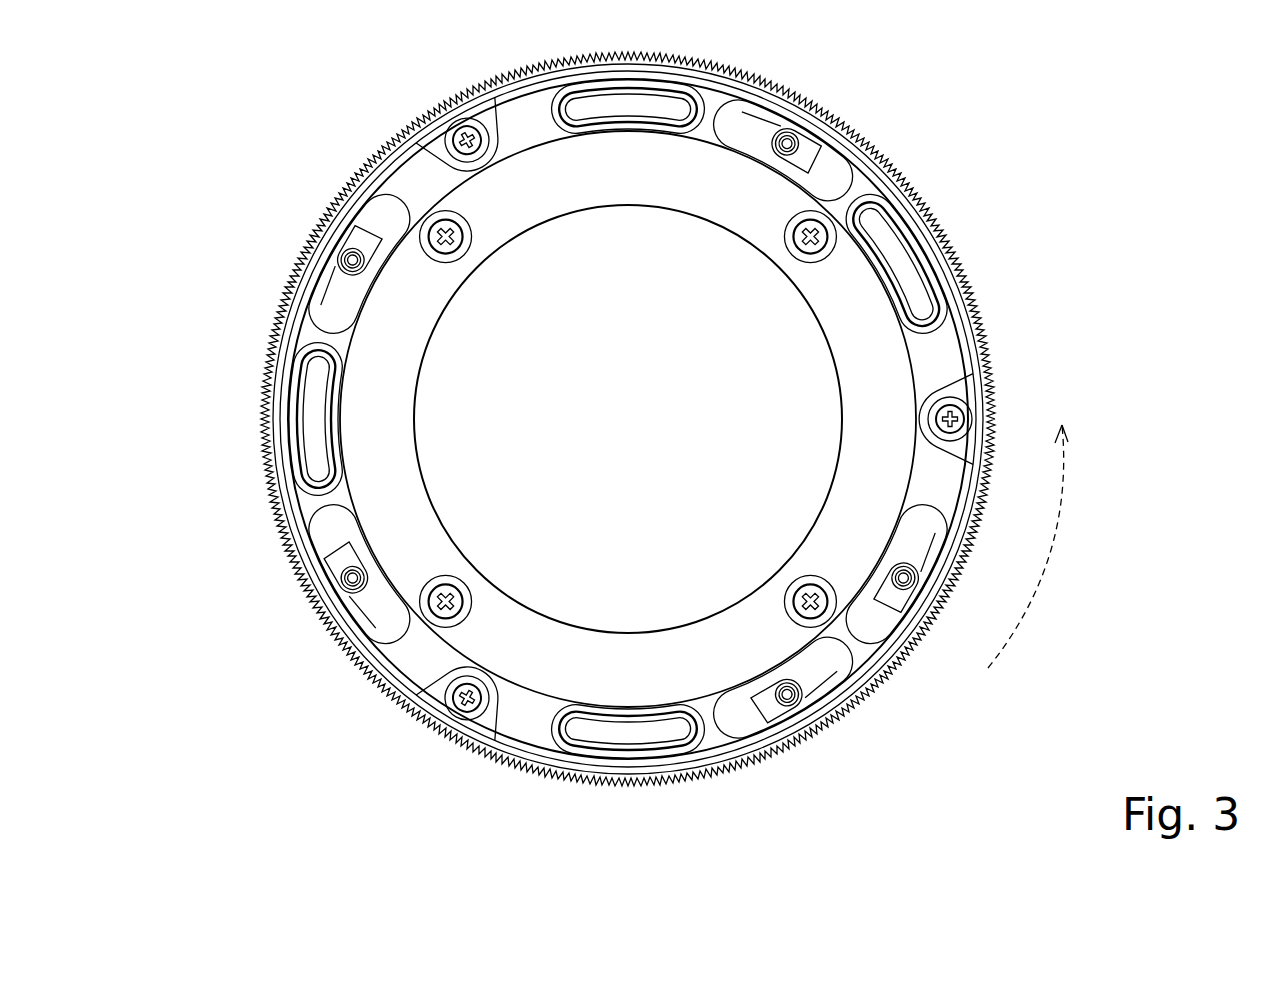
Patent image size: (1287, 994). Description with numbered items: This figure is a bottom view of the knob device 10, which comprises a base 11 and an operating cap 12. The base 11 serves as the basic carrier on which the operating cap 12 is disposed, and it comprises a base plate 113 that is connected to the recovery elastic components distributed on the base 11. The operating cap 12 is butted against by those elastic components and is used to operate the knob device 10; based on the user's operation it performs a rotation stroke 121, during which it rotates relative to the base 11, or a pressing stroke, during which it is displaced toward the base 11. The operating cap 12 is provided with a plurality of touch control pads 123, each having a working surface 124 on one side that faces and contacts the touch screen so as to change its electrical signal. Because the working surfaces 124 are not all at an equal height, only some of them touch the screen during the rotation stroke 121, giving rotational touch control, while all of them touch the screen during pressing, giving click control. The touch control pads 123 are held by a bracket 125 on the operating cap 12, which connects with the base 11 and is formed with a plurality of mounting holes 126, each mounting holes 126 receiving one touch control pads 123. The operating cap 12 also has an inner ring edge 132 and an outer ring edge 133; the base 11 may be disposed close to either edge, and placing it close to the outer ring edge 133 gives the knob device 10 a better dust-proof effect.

The knob device 10 is at (1178, 70).
The base 11 is at (765, 647).
The operating cap 12 is at (982, 321).
The base plate 113 is at (374, 444).
The rotation stroke 121 is at (1050, 540).
The touch control pads 123 is at (872, 197).
The working surface 124 is at (887, 232).
The bracket 125 is at (418, 661).
The mounting holes 126 is at (332, 312).
The inner ring edge 132 is at (535, 230).
The outer ring edge 133 is at (330, 210).